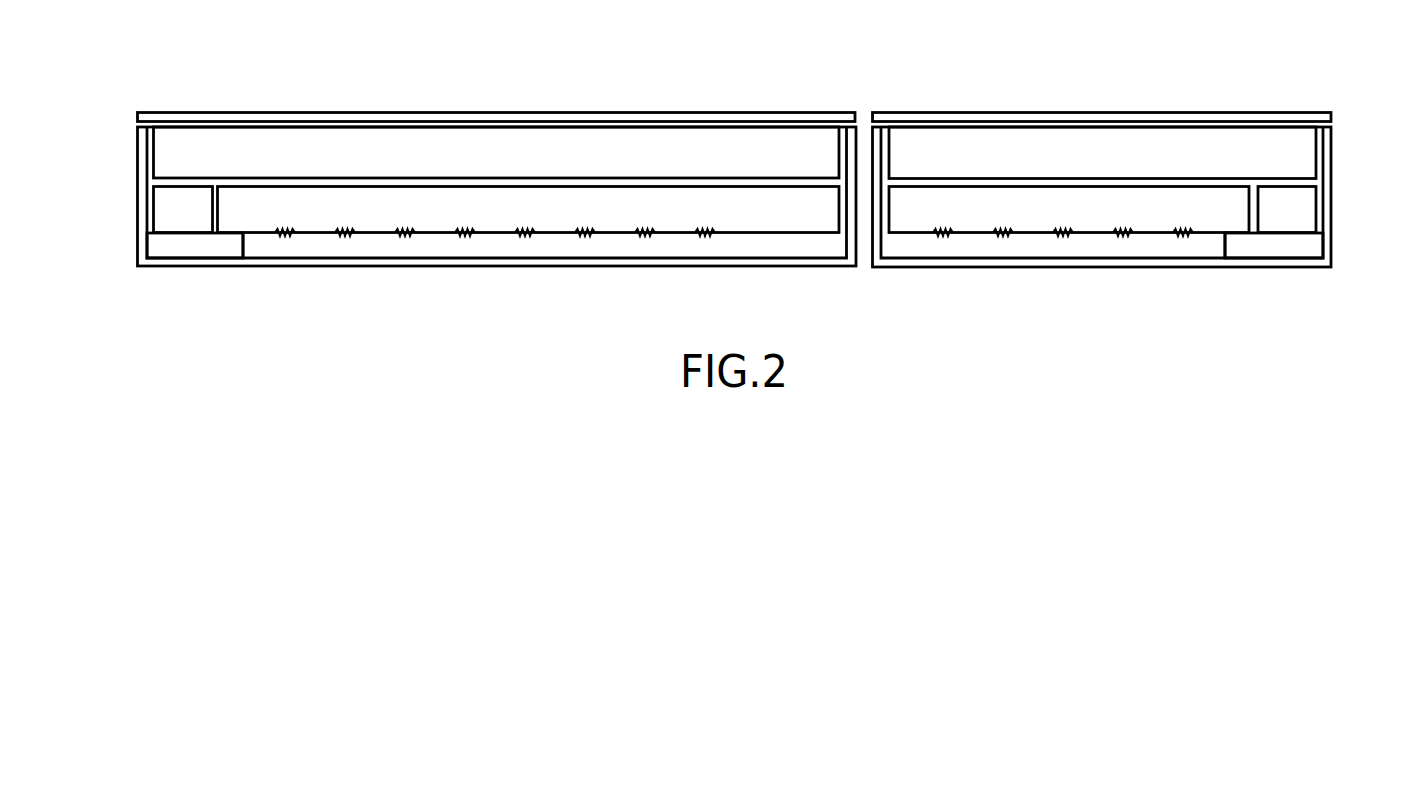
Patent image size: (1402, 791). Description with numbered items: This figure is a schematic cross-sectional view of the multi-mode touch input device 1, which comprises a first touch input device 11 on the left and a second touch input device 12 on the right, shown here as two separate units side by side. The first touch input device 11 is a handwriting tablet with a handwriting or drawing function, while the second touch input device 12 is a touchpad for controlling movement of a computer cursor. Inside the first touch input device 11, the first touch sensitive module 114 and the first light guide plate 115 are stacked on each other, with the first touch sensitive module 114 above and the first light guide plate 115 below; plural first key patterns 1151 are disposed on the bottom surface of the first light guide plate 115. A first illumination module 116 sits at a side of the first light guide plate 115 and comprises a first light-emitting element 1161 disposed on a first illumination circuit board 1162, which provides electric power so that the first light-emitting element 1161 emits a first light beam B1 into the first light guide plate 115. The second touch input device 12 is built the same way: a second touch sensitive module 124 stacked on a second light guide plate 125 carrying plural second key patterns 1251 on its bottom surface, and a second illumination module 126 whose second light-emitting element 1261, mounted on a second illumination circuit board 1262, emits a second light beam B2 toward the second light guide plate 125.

The multi-mode touch input device 1 is at (996, 48).
The first touch input device 11 is at (382, 97).
The second touch input device 12 is at (1088, 95).
The first touch sensitive module 114 is at (283, 140).
The second touch sensitive module 124 is at (1188, 138).
The first light guide plate 115 is at (567, 207).
The second light guide plate 125 is at (957, 208).
The first key patterns 1151 is at (465, 235).
The second key patterns 1251 is at (1060, 235).
The first illumination module 116 is at (163, 269).
The first light-emitting element 1161 is at (173, 214).
The first illumination circuit board 1162 is at (208, 248).
The second illumination module 126 is at (1306, 268).
The second light-emitting element 1261 is at (1295, 214).
The second illumination circuit board 1262 is at (1274, 271).
The first light beam B1 is at (213, 208).
The second light beam B2 is at (1257, 210).